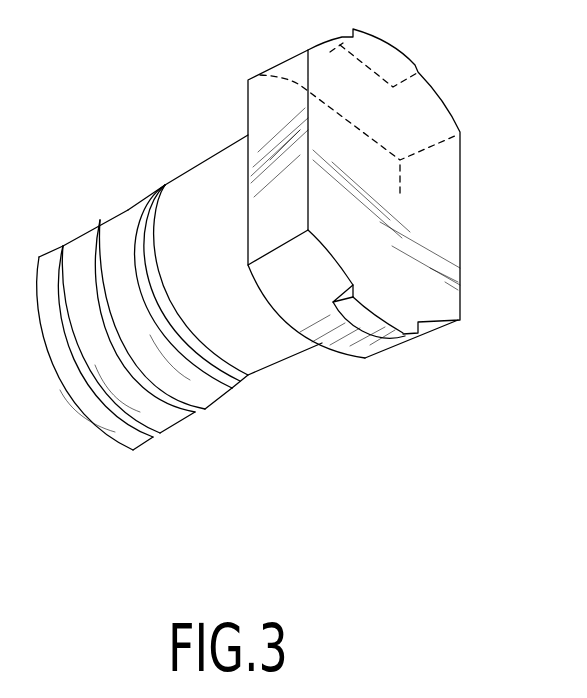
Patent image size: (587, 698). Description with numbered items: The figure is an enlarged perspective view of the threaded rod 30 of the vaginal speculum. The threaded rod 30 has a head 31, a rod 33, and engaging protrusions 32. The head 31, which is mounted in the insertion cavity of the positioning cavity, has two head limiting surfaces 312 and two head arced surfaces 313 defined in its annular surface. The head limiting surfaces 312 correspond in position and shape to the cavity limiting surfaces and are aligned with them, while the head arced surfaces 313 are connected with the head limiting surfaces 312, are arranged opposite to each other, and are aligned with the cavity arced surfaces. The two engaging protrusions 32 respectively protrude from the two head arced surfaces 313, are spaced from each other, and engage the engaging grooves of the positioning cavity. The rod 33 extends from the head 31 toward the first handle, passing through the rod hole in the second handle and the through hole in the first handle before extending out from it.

The threaded rod 30 is at (134, 114).
The head 31 is at (447, 98).
The engaging protrusion 32 is at (418, 350).
The rod 33 is at (123, 237).
The head limiting surface 312 is at (278, 95).
The head arced surface 313 is at (332, 340).